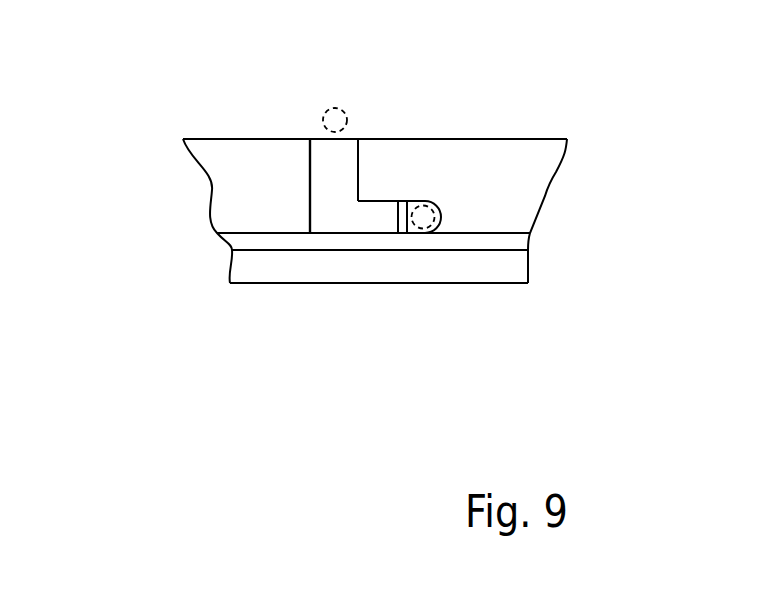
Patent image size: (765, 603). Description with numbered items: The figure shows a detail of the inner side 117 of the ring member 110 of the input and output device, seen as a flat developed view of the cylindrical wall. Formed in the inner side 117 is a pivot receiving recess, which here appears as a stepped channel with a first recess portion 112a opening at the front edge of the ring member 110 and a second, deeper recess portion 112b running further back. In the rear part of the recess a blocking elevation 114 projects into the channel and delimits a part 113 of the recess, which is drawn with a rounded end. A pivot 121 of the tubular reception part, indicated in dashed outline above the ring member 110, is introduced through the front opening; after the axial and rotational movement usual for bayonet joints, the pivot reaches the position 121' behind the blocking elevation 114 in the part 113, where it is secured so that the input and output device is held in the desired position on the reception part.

The ring member 110 is at (499, 135).
The inner side 117 is at (243, 155).
The first projection wall 112a is at (327, 175).
The second step portion 112b is at (375, 220).
The blocking elevation 114 is at (403, 203).
The part of the pivot receiving recess 113 is at (438, 208).
The pivot 121 is at (337, 70).
The displaced reference position (dashed circle) 121' is at (443, 311).